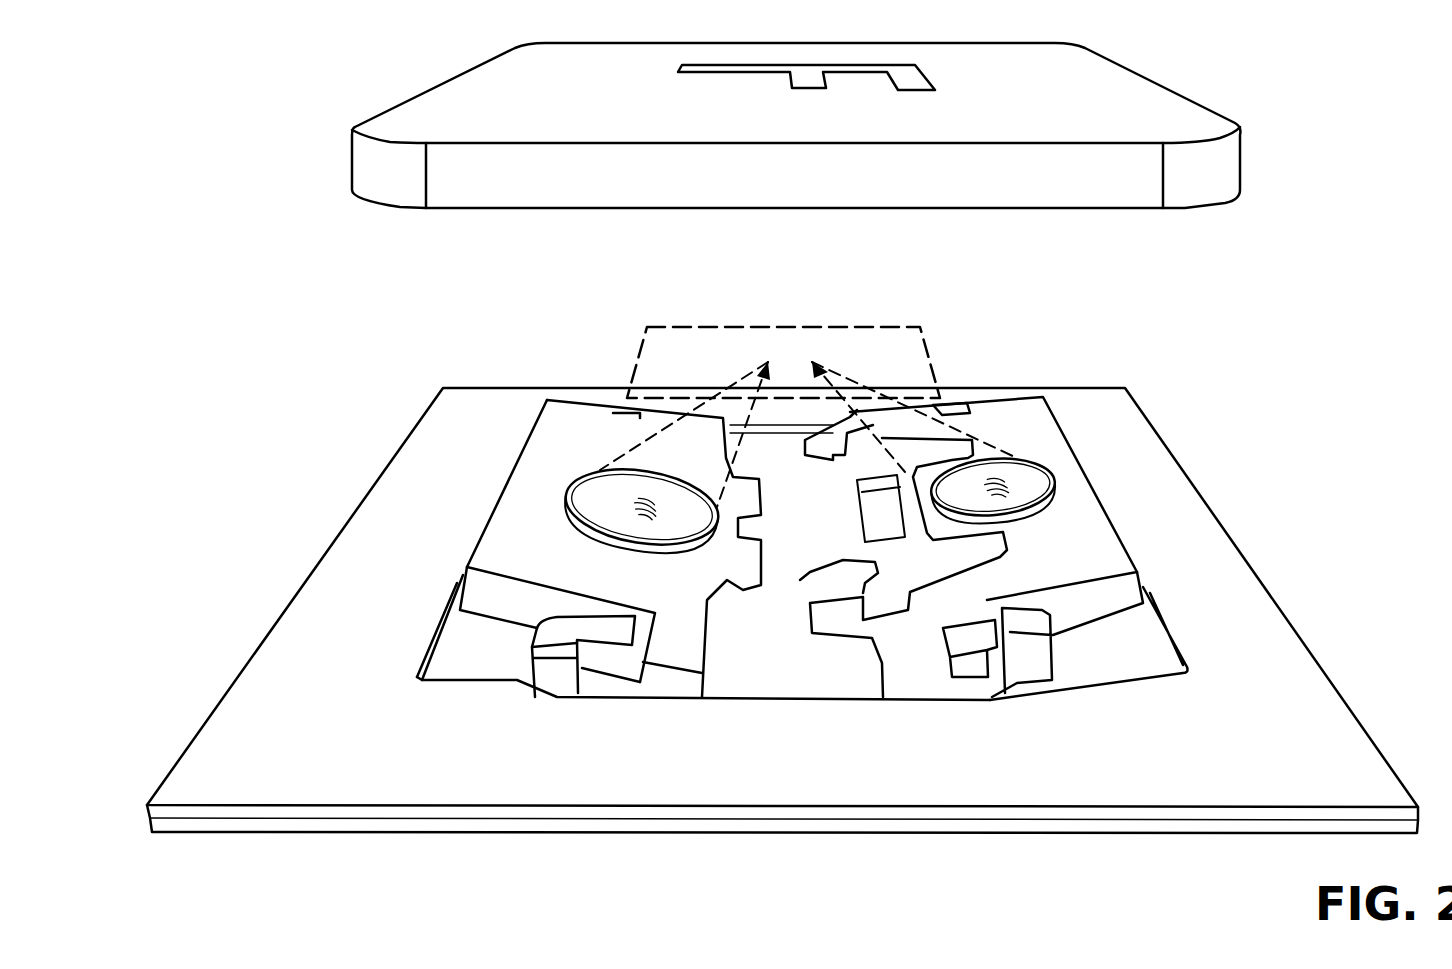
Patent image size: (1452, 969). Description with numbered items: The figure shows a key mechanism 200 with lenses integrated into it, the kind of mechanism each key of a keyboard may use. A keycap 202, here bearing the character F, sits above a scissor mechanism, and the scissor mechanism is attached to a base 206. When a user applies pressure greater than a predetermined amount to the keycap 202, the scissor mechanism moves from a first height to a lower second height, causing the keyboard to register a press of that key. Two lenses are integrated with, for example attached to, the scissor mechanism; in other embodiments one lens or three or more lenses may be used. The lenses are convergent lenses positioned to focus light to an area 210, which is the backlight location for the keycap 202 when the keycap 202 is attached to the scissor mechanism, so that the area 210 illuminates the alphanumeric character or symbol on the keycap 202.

The key mechanism 200 is at (147, 60).
The keycap 202 is at (352, 128).
The base 206 is at (287, 607).
The area 210 is at (807, 324).